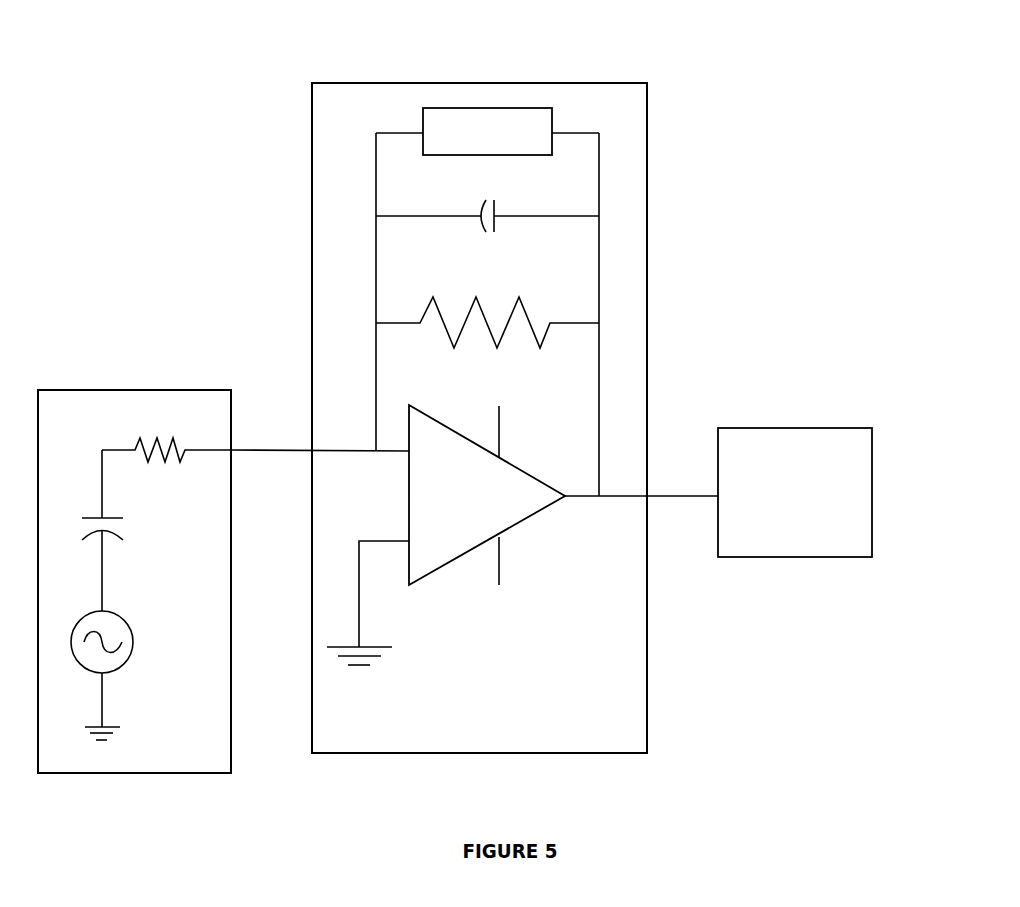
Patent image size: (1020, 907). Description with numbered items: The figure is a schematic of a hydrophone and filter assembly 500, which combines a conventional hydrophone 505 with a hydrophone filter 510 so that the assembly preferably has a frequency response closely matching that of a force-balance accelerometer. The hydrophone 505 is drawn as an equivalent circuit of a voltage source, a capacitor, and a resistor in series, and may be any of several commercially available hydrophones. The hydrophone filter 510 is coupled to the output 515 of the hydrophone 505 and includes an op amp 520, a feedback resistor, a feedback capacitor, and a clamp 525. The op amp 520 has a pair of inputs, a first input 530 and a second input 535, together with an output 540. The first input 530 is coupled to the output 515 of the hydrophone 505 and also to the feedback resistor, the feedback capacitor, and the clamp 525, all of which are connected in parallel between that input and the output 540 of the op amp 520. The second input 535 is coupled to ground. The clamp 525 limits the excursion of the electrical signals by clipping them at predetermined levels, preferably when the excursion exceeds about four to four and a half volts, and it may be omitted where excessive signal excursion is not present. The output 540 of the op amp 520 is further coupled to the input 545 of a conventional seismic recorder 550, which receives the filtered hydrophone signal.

The hydrophone and filter assembly 500 is at (232, 68).
The hydrophone 505 is at (135, 773).
The hydrophone filter 510 is at (647, 328).
The output 515 is at (280, 451).
The op amp 520 is at (517, 523).
The clamp 525 is at (487, 108).
The first input 530 is at (343, 451).
The second input 535 is at (359, 541).
The output 540 is at (622, 495).
The input 545 is at (683, 495).
The seismic recorder 550 is at (795, 557).